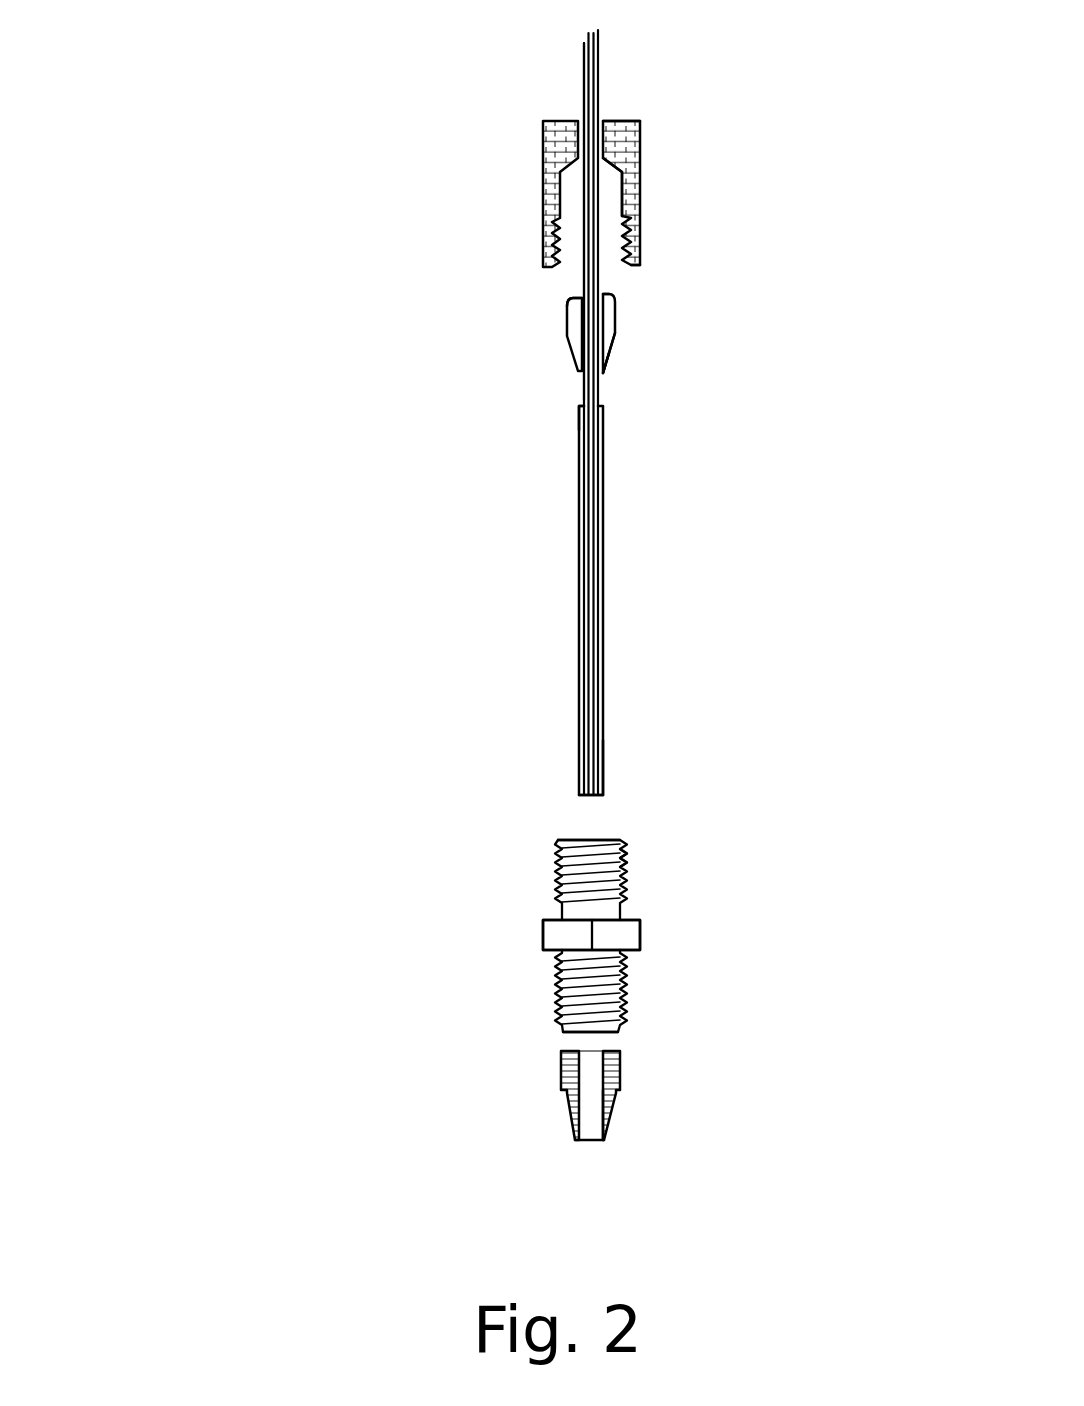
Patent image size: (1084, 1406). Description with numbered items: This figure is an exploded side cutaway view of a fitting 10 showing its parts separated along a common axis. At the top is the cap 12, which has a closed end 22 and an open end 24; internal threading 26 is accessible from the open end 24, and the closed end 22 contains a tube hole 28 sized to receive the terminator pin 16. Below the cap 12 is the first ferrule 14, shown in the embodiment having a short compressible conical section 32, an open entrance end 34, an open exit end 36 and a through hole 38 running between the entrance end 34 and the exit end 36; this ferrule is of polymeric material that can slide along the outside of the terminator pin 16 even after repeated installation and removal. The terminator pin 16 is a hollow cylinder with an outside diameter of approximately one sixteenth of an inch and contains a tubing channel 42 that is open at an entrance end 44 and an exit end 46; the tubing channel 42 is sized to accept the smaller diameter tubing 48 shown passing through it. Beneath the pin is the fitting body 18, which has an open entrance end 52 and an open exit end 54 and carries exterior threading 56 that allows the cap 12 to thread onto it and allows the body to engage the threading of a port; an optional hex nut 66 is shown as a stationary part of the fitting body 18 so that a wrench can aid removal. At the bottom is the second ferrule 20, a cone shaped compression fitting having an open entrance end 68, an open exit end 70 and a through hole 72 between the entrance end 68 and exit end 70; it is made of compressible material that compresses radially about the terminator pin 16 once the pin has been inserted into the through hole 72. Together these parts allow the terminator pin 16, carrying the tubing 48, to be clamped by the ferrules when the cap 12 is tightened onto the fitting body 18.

The fitting 10 is at (219, 1171).
The cap 12 is at (640, 152).
The first ferrule 14 is at (614, 318).
The terminator pin 16 is at (604, 512).
The fitting body 18 is at (622, 910).
The second ferrule 20 is at (620, 1077).
The closed end 22 is at (640, 118).
The open end 24 is at (632, 266).
The internal threading 26 is at (638, 218).
The tube hole 28 is at (582, 118).
The compressible conical section 32 is at (605, 355).
The entrance end 34 is at (604, 294).
The exit end 36 is at (603, 368).
The through hole 38 is at (583, 297).
The tubing channel 42 is at (604, 767).
The entrance end 44 is at (582, 405).
The exit end 46 is at (578, 797).
The smaller diameter tubing 48 is at (600, 48).
The entrance end 52 is at (600, 838).
The exit end 54 is at (620, 1045).
The exterior threading 56 is at (626, 862).
The hex nut 66 is at (641, 938).
The entrance end 68 is at (590, 1060).
The exit end 70 is at (594, 1140).
The through hole 72 is at (593, 1106).